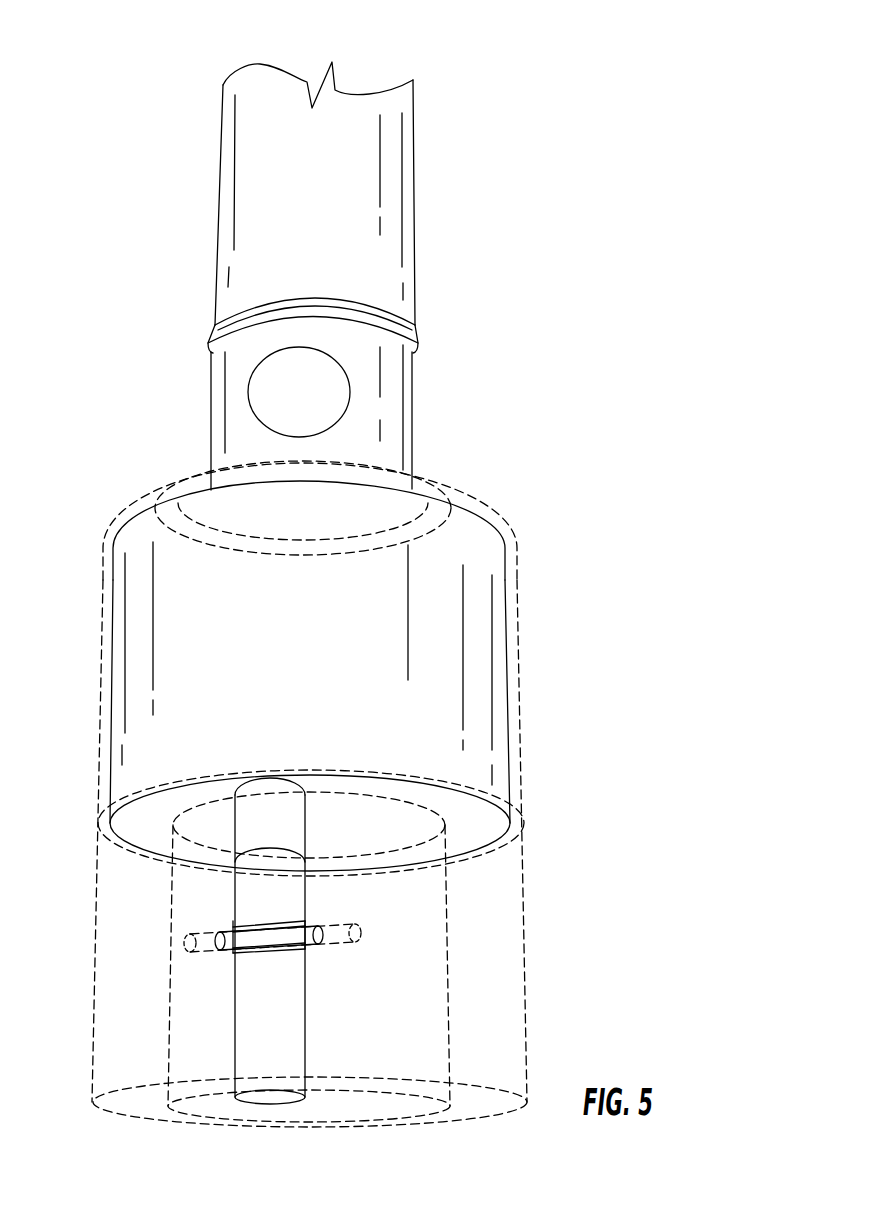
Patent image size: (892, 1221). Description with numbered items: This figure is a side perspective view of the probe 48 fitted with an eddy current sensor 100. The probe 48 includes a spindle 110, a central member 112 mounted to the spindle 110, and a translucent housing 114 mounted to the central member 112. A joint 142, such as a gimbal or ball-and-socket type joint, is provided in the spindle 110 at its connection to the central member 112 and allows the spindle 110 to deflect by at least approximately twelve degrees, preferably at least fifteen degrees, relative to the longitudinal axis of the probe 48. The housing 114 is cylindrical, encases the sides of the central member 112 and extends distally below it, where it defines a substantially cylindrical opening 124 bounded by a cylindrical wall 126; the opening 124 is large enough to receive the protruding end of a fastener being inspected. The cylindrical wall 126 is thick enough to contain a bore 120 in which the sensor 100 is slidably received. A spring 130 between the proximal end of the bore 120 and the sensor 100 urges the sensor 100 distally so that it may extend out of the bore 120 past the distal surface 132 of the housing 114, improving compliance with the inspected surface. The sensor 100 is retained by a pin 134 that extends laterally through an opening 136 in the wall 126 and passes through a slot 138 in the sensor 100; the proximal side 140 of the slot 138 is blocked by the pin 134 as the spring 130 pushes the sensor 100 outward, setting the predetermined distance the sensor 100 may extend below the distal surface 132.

The probe 48 is at (513, 88).
The eddy current sensor 100 is at (270, 1058).
The spindle 110 is at (387, 217).
The central member 112 is at (440, 522).
The housing 114 is at (500, 915).
The bore 120 is at (303, 1038).
The opening 124 is at (345, 1120).
The cylindrical wall 126 is at (472, 1108).
The spring 130 is at (247, 820).
The distal surface 132 is at (143, 1102).
The pin 134 is at (230, 950).
The opening 136 is at (188, 942).
The slot 138 is at (290, 953).
The proximal side 140 is at (260, 920).
The joint 142 is at (205, 500).